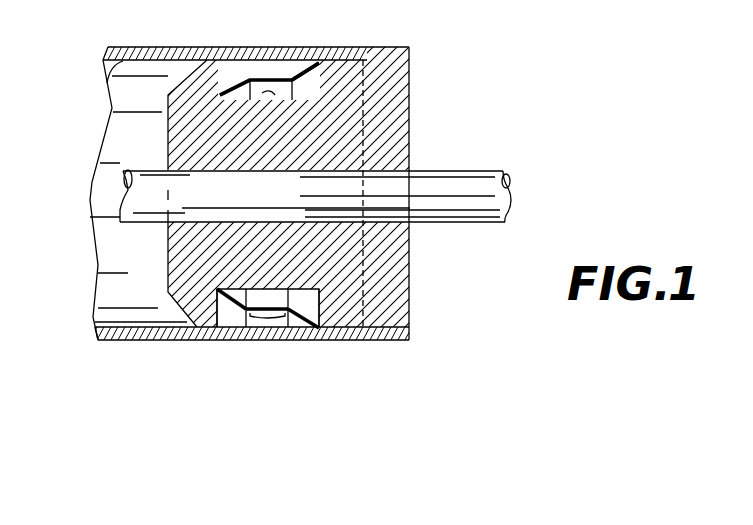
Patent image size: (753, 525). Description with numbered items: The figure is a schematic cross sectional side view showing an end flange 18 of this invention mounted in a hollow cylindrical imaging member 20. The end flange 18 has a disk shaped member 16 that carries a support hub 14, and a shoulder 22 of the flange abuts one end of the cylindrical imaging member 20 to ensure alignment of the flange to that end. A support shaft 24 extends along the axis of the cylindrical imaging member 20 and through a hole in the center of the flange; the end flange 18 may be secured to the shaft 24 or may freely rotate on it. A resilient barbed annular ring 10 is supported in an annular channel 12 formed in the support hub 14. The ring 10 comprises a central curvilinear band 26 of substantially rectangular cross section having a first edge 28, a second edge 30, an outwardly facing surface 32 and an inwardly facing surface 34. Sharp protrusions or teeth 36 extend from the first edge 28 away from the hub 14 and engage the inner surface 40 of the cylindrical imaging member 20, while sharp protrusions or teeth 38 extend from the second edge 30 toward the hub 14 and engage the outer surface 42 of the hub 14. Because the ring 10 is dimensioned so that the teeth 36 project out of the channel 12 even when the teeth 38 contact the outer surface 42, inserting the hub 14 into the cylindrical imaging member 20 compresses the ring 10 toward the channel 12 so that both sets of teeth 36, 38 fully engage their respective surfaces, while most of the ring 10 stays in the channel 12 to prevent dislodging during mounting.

The resilient barbed annular ring 10 is at (277, 58).
The annular channel 12 is at (293, 67).
The support hub 14 is at (168, 236).
The disk shaped member 16 is at (411, 80).
The end flange 18 is at (437, 121).
The cylindrical imaging member 20 is at (157, 47).
The shoulder 22 is at (382, 341).
The support shaft 24 is at (465, 172).
The central curvilinear band 26 is at (273, 312).
The first edge 28 is at (299, 318).
The second edge 30 is at (241, 318).
The outwardly facing surface 32 is at (256, 72).
The inwardly facing surface 34 is at (283, 290).
The sharp protrusions or teeth 36 is at (311, 333).
The sharp protrusions or teeth 38 is at (240, 293).
The inner surface 40 is at (108, 82).
The outer surface 42 is at (270, 93).